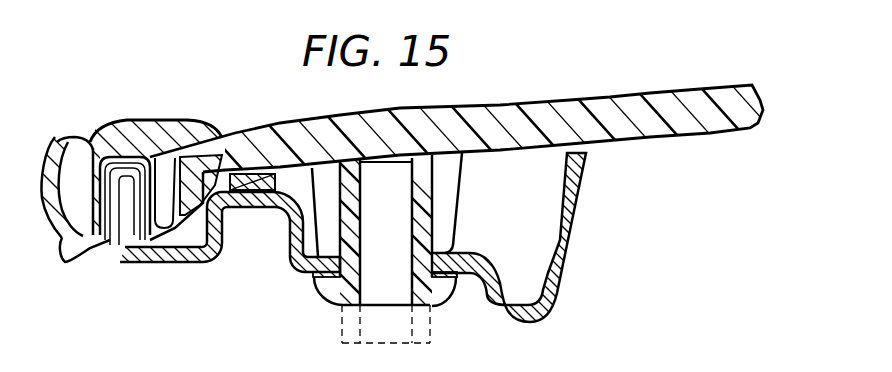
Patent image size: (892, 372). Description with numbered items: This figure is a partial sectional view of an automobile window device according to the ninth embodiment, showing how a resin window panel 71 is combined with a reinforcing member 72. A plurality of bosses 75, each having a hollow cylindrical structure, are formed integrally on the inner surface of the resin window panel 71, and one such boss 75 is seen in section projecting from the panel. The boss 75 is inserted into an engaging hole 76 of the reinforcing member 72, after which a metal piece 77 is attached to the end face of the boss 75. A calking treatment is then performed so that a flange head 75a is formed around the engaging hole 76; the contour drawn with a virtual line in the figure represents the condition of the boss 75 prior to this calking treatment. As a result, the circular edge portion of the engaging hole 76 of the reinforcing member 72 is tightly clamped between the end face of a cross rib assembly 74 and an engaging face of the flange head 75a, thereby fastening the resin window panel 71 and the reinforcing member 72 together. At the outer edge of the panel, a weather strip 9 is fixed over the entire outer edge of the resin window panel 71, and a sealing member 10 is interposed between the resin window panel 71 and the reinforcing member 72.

The weather strip 9 is at (147, 122).
The sealing member 10 is at (268, 206).
The resin window panel 71 is at (503, 102).
The reinforcing member 72 is at (517, 322).
The cross rib assembly 74 is at (462, 228).
The boss 75 is at (440, 307).
The flange head 75a is at (337, 295).
The engaging hole 76 is at (300, 259).
The metal piece 77 is at (328, 278).